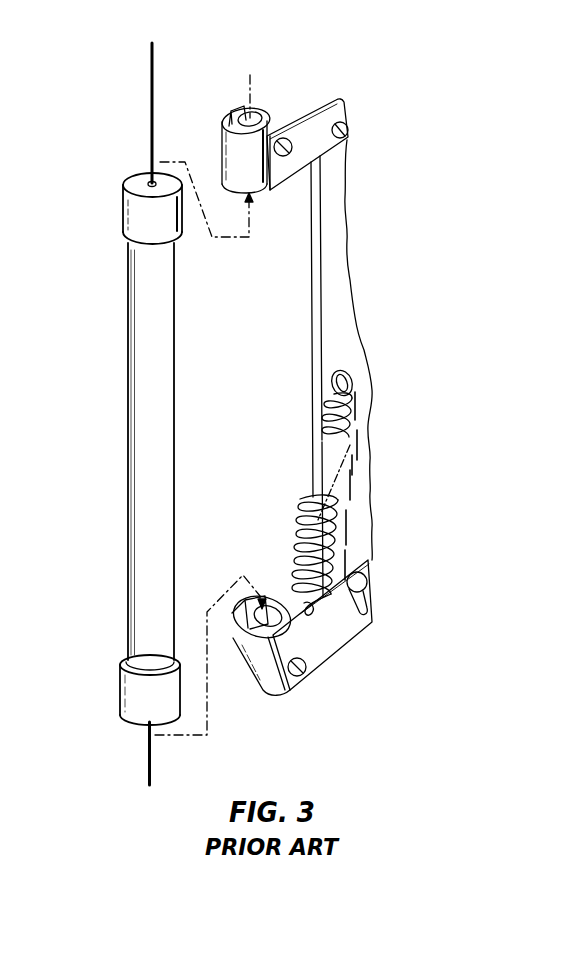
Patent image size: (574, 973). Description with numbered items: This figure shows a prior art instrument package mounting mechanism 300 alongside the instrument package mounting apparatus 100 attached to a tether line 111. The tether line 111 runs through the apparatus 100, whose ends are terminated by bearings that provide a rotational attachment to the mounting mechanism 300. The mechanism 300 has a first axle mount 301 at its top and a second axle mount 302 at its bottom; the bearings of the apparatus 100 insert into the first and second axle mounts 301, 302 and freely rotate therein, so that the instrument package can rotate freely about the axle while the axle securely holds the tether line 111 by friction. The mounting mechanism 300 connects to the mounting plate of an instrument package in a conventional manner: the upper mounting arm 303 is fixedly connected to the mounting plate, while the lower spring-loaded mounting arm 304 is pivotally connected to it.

The instrument package mounting apparatus 100 is at (140, 305).
The tether line 111 is at (150, 72).
The instrument package mounting mechanism 300 is at (407, 192).
The first axle mount 301 is at (270, 117).
The second axle mount 302 is at (261, 678).
The upper mounting arm 303 is at (294, 169).
The lower spring-loaded mounting arm 304 is at (333, 630).